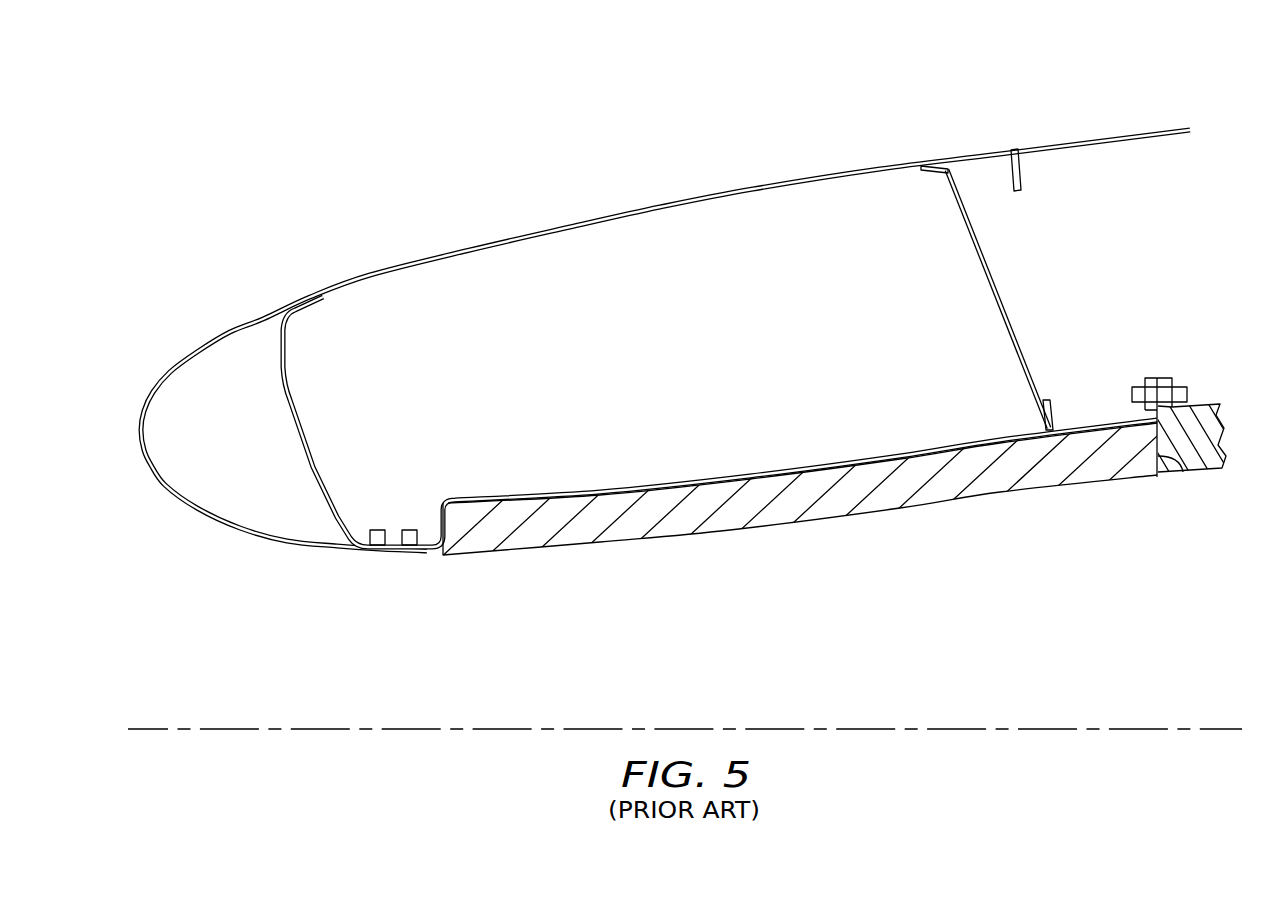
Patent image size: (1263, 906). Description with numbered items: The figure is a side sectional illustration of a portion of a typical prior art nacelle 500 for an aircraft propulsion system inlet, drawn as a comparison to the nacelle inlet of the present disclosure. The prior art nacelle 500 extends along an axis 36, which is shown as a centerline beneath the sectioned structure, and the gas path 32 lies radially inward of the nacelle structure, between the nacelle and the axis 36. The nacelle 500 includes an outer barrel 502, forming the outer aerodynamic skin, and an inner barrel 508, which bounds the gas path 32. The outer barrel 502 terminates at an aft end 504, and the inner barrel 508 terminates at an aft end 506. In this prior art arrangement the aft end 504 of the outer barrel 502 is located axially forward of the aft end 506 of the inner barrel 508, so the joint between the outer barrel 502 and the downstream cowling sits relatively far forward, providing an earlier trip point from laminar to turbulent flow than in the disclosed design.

The prior art nacelle 500 is at (702, 319).
The outer barrel 502 is at (755, 180).
The aft end of outer barrel 504 is at (1023, 150).
The aft end of inner barrel 506 is at (1165, 458).
The inner barrel 508 is at (886, 520).
The gas path 32 is at (659, 662).
The axis 36 is at (194, 730).